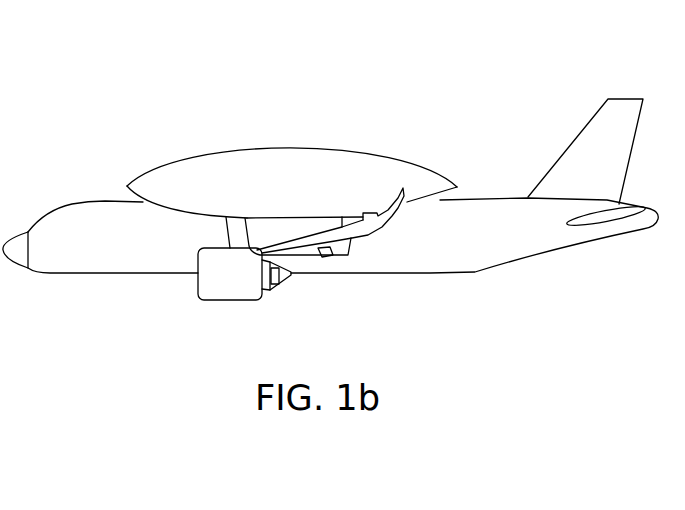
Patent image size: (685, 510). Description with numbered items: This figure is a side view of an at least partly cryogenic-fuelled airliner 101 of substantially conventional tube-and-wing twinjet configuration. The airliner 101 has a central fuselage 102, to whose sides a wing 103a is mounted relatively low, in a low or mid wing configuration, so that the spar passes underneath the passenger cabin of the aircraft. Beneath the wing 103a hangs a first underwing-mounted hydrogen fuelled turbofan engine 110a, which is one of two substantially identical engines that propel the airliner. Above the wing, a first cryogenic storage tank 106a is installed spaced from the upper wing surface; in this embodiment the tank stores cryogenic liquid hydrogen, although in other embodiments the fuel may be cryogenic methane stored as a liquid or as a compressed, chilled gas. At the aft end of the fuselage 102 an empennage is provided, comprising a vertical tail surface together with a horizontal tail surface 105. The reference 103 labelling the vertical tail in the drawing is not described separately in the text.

The airliner 101 is at (151, 126).
The central fuselage 102 is at (473, 272).
The vertical tail fin 103 is at (617, 122).
The wing 103a is at (305, 243).
The horizontal tail surface 105 is at (592, 215).
The first cryogenic storage tank 106a is at (316, 147).
The first underwing-mounted hydrogen fuelled turbofan engine 110a is at (197, 288).